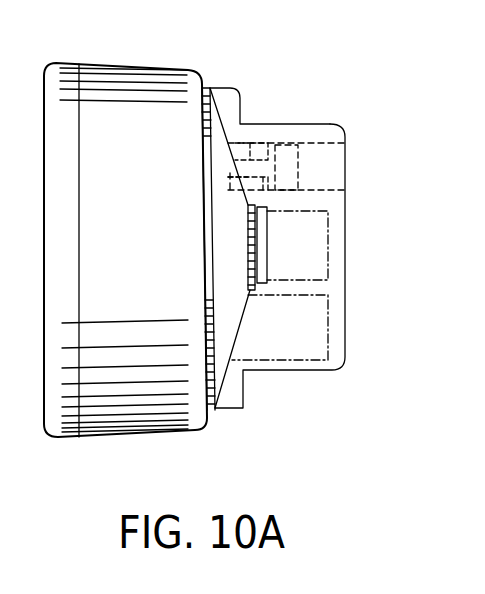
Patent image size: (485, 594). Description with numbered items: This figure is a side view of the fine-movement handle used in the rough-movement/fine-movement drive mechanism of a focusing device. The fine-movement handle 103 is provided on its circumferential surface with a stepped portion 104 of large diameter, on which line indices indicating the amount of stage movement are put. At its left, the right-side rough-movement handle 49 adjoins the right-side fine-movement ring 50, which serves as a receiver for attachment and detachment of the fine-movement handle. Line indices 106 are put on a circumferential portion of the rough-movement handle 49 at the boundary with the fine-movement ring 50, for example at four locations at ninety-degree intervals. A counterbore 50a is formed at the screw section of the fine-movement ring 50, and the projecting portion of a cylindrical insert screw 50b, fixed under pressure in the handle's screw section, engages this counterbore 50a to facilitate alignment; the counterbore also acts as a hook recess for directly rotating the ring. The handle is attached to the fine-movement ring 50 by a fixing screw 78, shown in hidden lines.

The right-side rough-movement handle 49 is at (132, 75).
The stepped portion 104 is at (230, 85).
The insert screw 50b is at (252, 143).
The fixing screw 78 is at (295, 137).
The counterbore 50a is at (228, 177).
The line indices 106 is at (203, 247).
The right-side fine-movement ring 50 is at (214, 408).
The fine-movement handle 103 is at (317, 372).